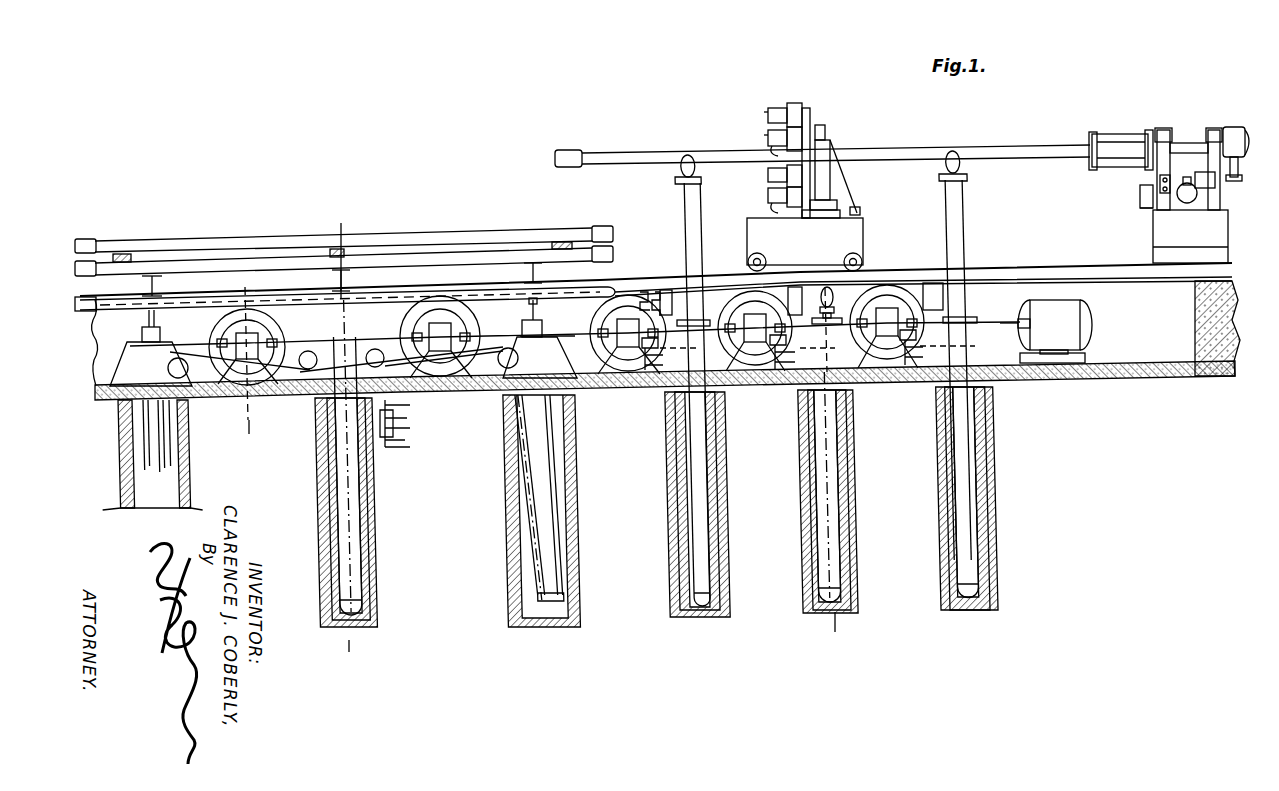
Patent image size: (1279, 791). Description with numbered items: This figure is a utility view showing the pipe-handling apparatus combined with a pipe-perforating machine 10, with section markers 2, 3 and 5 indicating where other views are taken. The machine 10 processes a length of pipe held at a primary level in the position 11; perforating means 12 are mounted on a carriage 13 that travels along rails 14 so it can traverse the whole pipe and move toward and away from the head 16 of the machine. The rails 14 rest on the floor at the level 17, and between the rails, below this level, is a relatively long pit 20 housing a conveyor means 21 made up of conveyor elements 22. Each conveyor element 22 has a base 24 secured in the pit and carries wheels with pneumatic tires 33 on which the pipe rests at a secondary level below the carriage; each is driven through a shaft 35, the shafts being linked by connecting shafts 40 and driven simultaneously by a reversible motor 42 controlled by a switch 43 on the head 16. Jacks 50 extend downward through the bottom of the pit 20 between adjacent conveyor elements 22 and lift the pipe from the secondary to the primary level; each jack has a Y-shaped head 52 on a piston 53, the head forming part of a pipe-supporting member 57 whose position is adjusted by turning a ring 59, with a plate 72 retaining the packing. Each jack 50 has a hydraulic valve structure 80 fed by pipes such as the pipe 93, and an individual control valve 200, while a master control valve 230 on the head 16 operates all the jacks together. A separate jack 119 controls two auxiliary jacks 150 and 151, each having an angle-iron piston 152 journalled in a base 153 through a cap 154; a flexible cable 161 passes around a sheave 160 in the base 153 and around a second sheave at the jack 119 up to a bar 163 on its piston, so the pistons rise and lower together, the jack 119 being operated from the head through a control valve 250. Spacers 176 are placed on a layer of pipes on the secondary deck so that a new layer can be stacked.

The machine 10 is at (1133, 128).
The pipe position 11 is at (450, 297).
The perforating means 12 is at (798, 105).
The carriage 13 is at (852, 232).
The rails 14 is at (668, 290).
The head 16 is at (1216, 228).
The floor level 17 is at (1234, 280).
The pit 20 is at (985, 300).
The conveyor means 21 is at (900, 295).
The conveyor elements 22 is at (208, 330).
The base 24 is at (272, 388).
The pneumatic tire 33 is at (284, 327).
The shaft 35 is at (462, 335).
The connecting shafts 40 is at (586, 337).
The motor 42 is at (1085, 326).
The switch 43 is at (1157, 180).
The jacks 50 is at (702, 532).
The head 52 is at (698, 166).
The piston 53 is at (845, 393).
The pipe-supporting member 57 is at (678, 156).
The ring 59 is at (821, 183).
The plate 72 is at (698, 320).
The valve structure 80 is at (400, 428).
The pipe 93 is at (640, 294).
The jack 119 is at (355, 514).
The auxiliary jack 150 is at (560, 494).
The auxiliary jack 151 is at (168, 450).
The angle-iron structure 152 is at (545, 545).
The base 153 is at (143, 363).
The cap 154 is at (536, 325).
The sheave 160 is at (480, 379).
The flexible cable 161 is at (520, 435).
The bar 163 is at (365, 302).
The spacers 176 is at (562, 242).
The individual control valve 200 is at (697, 284).
The master control valve 230 is at (1150, 212).
The control valve 250 is at (1143, 205).
The section line 2 is at (236, 281).
The section line 3 is at (838, 262).
The section line 5 is at (336, 440).